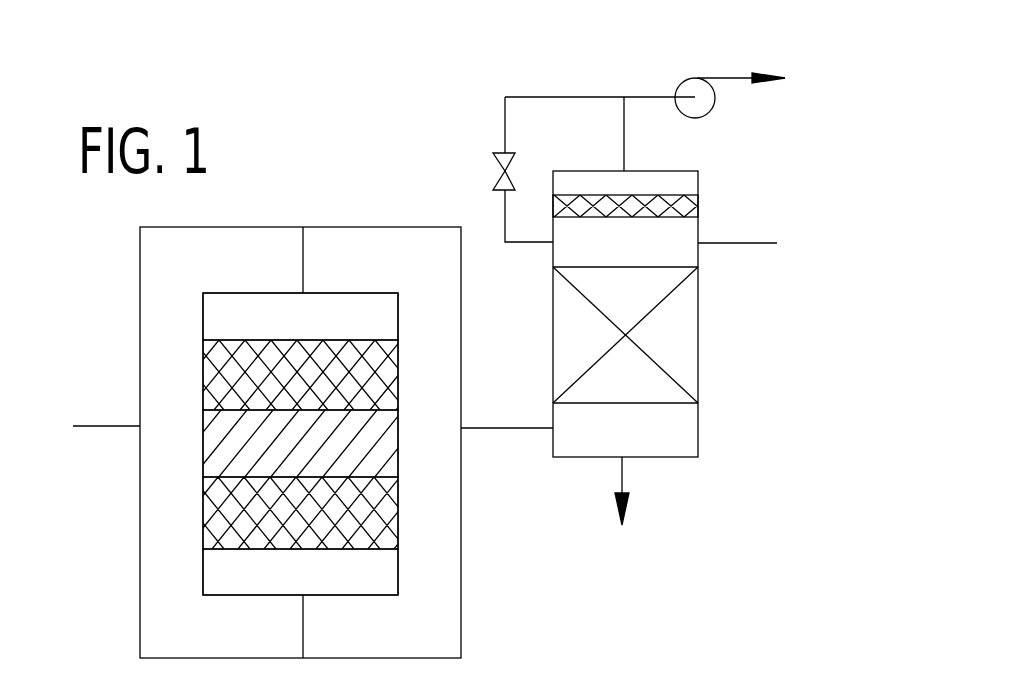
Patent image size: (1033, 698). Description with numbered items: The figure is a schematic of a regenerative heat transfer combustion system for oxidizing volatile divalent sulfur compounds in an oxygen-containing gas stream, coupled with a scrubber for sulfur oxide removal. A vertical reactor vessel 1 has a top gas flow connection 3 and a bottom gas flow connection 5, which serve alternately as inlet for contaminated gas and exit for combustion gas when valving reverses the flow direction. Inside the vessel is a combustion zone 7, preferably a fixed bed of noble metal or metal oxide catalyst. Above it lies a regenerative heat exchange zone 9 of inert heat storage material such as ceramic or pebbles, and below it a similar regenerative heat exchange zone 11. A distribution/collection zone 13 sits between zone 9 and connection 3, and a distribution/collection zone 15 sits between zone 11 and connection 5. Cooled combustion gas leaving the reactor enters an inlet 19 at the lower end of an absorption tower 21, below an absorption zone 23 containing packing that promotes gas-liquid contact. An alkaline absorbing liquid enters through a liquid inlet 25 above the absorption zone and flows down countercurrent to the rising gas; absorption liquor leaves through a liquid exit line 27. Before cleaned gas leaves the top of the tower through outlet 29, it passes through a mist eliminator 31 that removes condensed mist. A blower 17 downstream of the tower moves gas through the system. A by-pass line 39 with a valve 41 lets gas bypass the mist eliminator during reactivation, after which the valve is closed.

The vertical reactor vessel 1 is at (400, 372).
The top gas flow connection 3 is at (303, 268).
The bottom gas flow connection 5 is at (300, 605).
The combustion zone 7 is at (358, 455).
The regenerative heat exchange zone 9 is at (225, 377).
The regenerative heat exchange zone 11 is at (352, 511).
The distribution/collection zone 13 is at (357, 317).
The distribution/collection zone 15 is at (357, 583).
The blower 17 is at (690, 77).
The inlet 19 is at (497, 430).
The absorption tower 21 is at (668, 347).
The absorption zone 23 is at (588, 351).
The liquid inlet 25 is at (717, 244).
The liquid exit line 27 is at (623, 477).
The outlet 29 is at (624, 137).
The mist eliminator 31 is at (698, 202).
The by-pass line 39 is at (503, 110).
The valve 41 is at (510, 165).